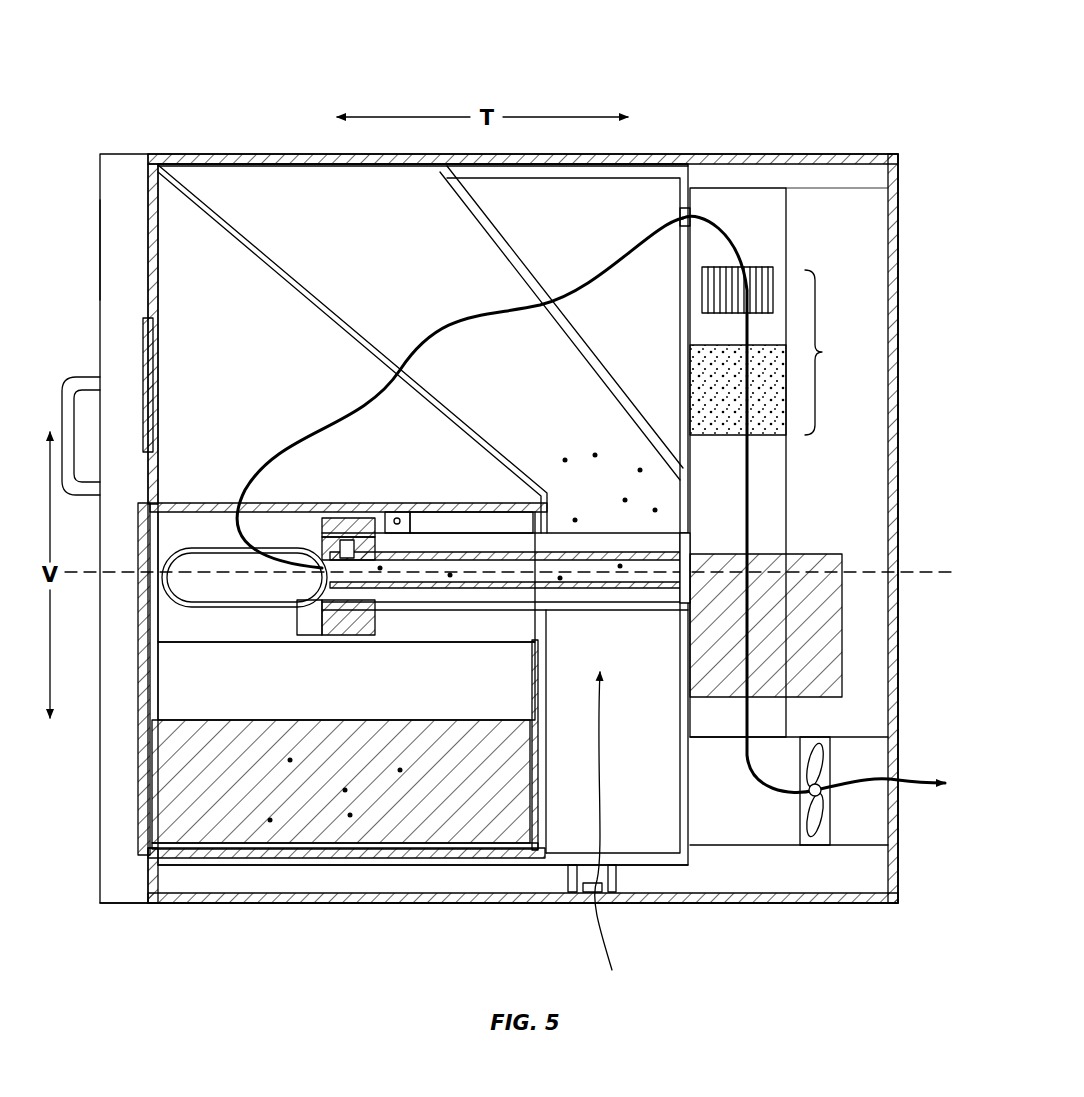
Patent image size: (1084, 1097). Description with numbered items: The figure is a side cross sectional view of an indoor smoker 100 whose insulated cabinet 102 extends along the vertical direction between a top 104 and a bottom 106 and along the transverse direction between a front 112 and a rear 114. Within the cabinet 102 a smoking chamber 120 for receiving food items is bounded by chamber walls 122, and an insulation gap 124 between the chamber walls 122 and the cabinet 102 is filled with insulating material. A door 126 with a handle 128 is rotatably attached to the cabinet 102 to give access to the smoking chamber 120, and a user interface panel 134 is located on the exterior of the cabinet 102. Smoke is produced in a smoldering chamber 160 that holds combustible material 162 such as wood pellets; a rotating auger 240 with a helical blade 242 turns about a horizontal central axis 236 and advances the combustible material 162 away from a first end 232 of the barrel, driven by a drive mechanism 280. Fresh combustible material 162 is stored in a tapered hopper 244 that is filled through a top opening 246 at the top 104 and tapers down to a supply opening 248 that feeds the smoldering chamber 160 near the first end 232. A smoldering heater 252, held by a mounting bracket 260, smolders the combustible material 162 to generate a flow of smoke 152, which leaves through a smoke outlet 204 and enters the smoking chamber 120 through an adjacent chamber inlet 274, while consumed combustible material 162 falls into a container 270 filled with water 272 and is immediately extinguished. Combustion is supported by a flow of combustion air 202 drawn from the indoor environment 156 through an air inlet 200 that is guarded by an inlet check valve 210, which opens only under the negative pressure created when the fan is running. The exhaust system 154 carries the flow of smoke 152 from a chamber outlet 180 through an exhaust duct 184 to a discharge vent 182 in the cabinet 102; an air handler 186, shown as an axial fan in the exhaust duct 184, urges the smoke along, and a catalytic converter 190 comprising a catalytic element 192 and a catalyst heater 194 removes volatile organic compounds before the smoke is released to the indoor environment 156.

The indoor smoker 100 is at (137, 105).
The cabinet 102 is at (898, 290).
The top 104 is at (215, 150).
The bottom 106 is at (180, 900).
The front 112 is at (100, 165).
The rear 114 is at (900, 200).
The smoking chamber 120 is at (205, 298).
The chamber walls 122 is at (638, 170).
The insulation gap 124 is at (840, 188).
The door 126 is at (118, 250).
The handle 128 is at (80, 380).
The user interface panel 134 is at (155, 382).
The flow of smoke 152 is at (452, 363).
The exhaust system 154 is at (772, 188).
The indoor environment 156 is at (922, 634).
The smoldering chamber 160 is at (485, 545).
The combustible material 162 is at (565, 435).
The chamber outlet 180 is at (683, 215).
The discharge vent 182 is at (898, 830).
The exhaust duct 184 is at (786, 250).
The air handler 186 is at (830, 820).
The catalytic converter 190 is at (833, 352).
The catalytic element 192 is at (700, 375).
The catalyst heater 194 is at (713, 290).
The air inlet 200 is at (566, 880).
The flow of combustion air 202 is at (605, 765).
The smoke outlet 204 is at (318, 538).
The inlet check valve 210 is at (597, 890).
The first end 232 is at (690, 535).
The central axis 236 is at (920, 565).
The rotating auger 240 is at (345, 520).
The helical blade 242 is at (477, 640).
The hopper 244 is at (522, 258).
The top opening 246 is at (293, 160).
The supply opening 248 is at (620, 525).
The smoldering heater 252 is at (345, 628).
The mounting bracket 260 is at (384, 515).
The container 270 is at (390, 855).
The water 272 is at (188, 784).
The chamber inlet 274 is at (210, 592).
The drive mechanism 280 is at (830, 665).